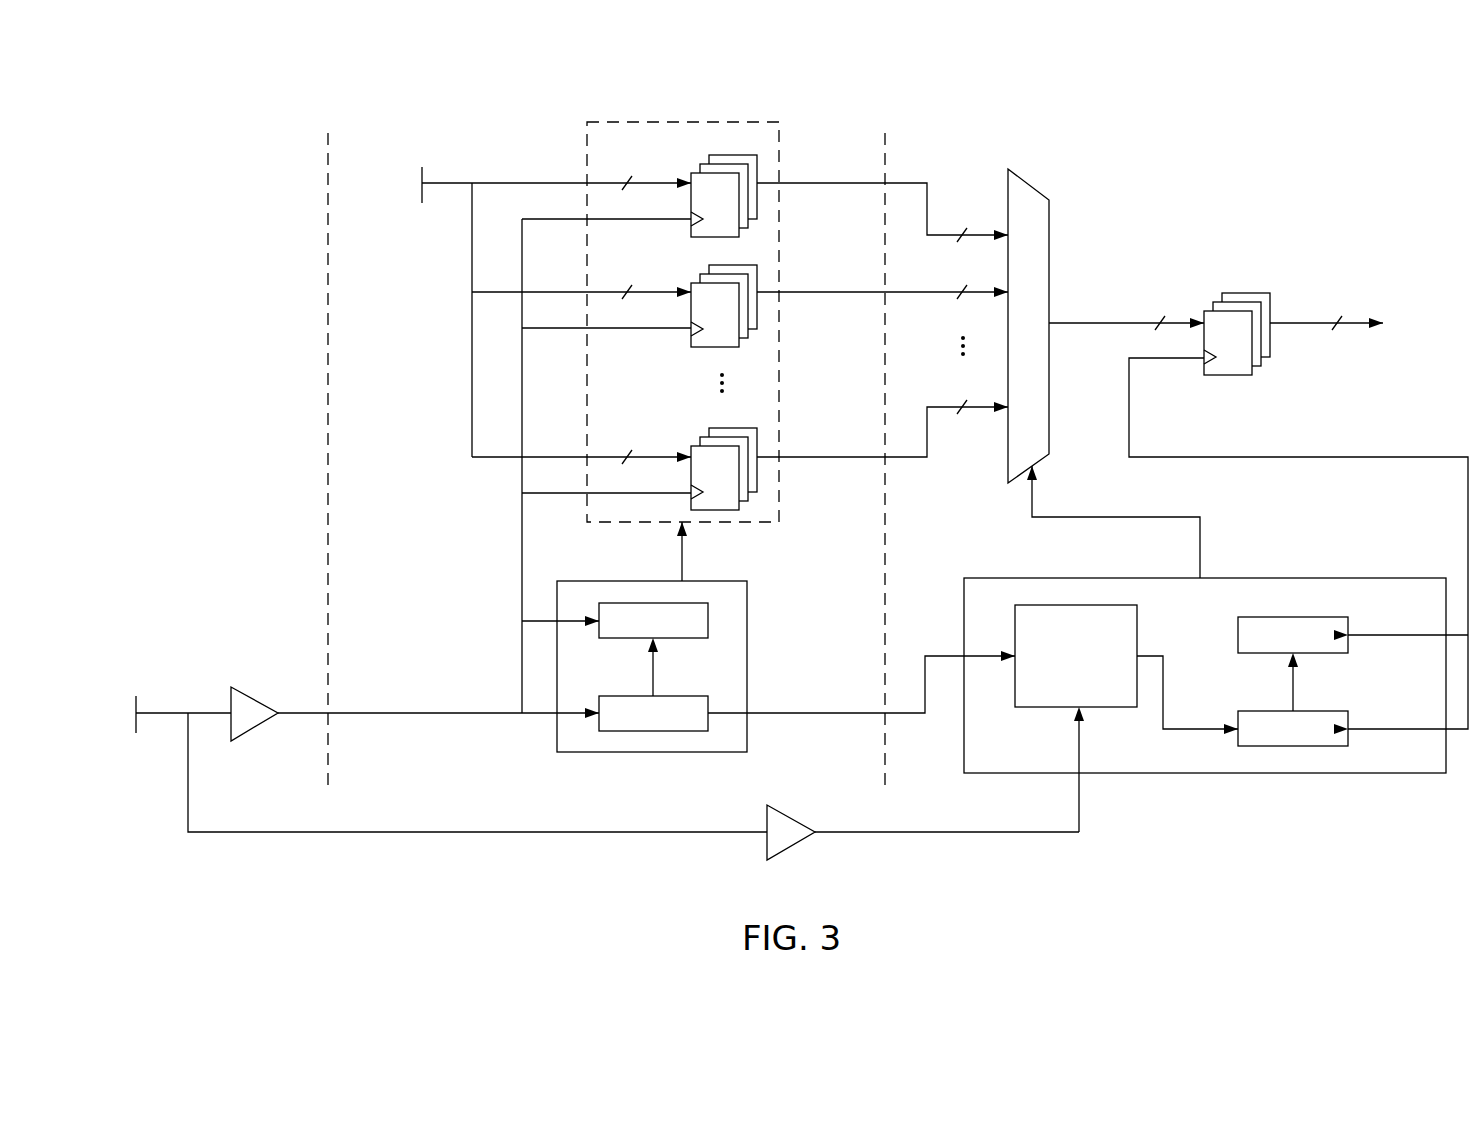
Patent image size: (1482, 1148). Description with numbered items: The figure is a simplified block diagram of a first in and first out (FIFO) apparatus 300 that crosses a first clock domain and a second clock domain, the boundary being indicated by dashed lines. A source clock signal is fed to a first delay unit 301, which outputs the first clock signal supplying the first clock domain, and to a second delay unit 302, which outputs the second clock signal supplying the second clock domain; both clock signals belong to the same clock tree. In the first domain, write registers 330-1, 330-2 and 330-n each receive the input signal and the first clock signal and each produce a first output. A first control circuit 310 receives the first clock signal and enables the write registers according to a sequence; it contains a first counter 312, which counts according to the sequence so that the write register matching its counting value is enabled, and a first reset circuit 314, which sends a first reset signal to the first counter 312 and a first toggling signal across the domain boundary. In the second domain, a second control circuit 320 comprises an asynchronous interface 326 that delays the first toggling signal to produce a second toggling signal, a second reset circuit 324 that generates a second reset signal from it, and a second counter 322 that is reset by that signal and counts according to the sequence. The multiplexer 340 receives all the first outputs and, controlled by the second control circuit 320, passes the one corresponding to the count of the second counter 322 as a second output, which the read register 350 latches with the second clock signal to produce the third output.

The first in and first out (FIFO) apparatus 300 is at (784, 441).
The first delay unit 301 is at (252, 697).
The second delay unit 302 is at (767, 812).
The first control circuit 310 is at (747, 605).
The first counter 312 is at (653, 620).
The first reset circuit 314 is at (653, 713).
The second control circuit 320 is at (1313, 578).
The second counter 322 is at (1293, 635).
The second reset circuit 324 is at (1293, 728).
The asynchronous interface 326 is at (1076, 656).
The write register 330-1 is at (691, 180).
The write register 330-2 is at (691, 290).
The write register 330-n is at (691, 454).
The multiplexer 340 is at (1040, 196).
The read register 350 is at (1204, 318).